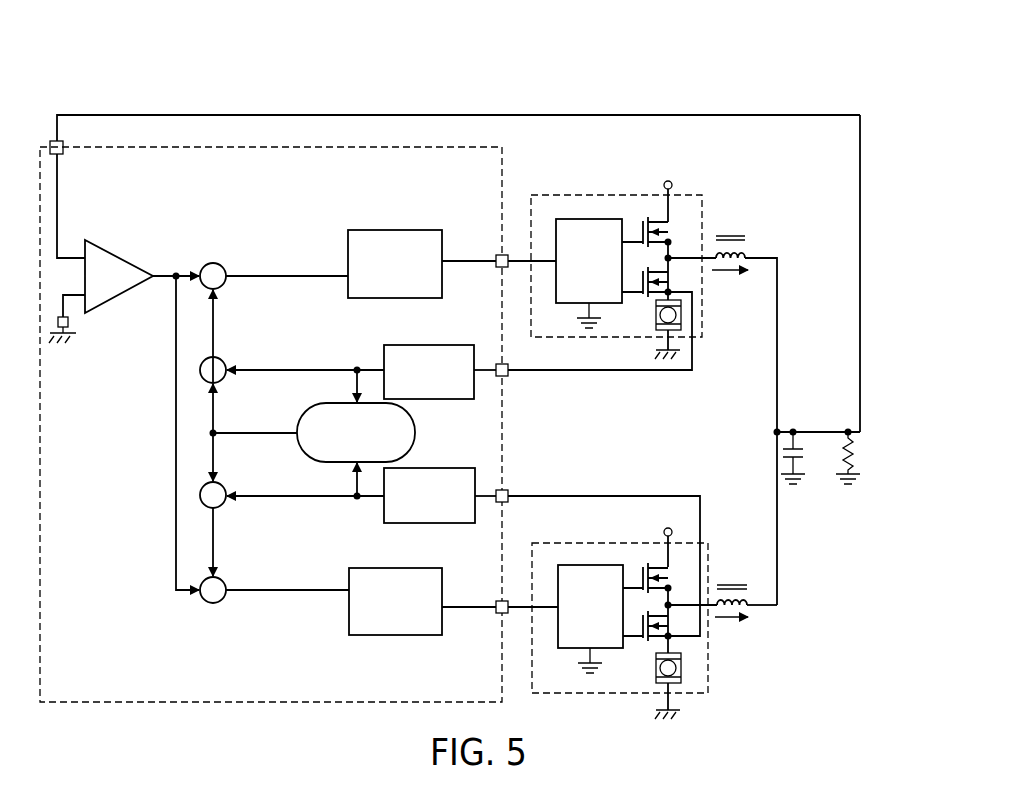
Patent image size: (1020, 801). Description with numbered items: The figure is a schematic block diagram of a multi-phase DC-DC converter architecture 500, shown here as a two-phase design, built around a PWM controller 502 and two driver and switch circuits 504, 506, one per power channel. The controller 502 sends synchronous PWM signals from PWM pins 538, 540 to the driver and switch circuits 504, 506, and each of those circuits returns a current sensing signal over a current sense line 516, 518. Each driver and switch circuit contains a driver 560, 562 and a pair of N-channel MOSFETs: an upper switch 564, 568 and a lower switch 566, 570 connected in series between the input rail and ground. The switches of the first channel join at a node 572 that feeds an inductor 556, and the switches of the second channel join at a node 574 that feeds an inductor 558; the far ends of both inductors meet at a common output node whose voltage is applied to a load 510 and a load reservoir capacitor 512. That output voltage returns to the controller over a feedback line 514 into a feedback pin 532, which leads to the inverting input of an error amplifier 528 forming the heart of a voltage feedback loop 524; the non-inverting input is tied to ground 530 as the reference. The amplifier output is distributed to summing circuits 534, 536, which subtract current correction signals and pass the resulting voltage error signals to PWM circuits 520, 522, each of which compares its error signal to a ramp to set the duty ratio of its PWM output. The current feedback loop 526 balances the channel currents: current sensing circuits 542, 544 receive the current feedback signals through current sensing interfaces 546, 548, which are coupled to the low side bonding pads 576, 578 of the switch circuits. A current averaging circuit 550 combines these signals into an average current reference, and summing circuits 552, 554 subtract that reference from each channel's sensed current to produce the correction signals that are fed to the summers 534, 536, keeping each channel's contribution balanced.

The multi-phase DC-DC converter architecture 500 is at (79, 76).
The PWM controller 502 is at (113, 706).
The driver and switch circuit 504 is at (705, 189).
The driver and switch circuit 506 is at (553, 695).
The load 510 is at (897, 433).
The load reservoir capacitor 512 is at (820, 462).
The feedback line 514 is at (207, 115).
The current sense line 516 is at (578, 372).
The current sense line 518 is at (680, 495).
The PWM circuit 520 is at (395, 230).
The PWM circuit 522 is at (383, 637).
The voltage feedback loop 524 is at (388, 108).
The current feedback loop 526 is at (162, 485).
The error amplifier 528 is at (140, 263).
The ground 530 is at (92, 355).
The feedback pin 532 is at (63, 150).
The summing circuit 534 is at (260, 267).
The summing circuit 536 is at (200, 597).
The PWM pin 538 is at (500, 255).
The PWM pin 540 is at (498, 615).
The current sensing circuit 542 is at (422, 345).
The current sensing circuit 544 is at (432, 468).
The current sensing interface 546 is at (500, 364).
The current sensing interface 548 is at (505, 490).
The current averaging circuit 550 is at (303, 412).
The summing circuit 552 is at (227, 358).
The summing circuit 554 is at (227, 482).
The inductor 556 is at (748, 245).
The inductor 558 is at (748, 598).
The driver 560 is at (556, 230).
The driver 562 is at (558, 583).
The upper switch 564 is at (645, 230).
The lower switch 566 is at (642, 282).
The upper switch 568 is at (643, 577).
The lower switch 570 is at (643, 628).
The node 572 is at (670, 262).
The node 574 is at (670, 603).
The low side bonding pad 576 is at (680, 318).
The low side bonding pad 578 is at (682, 665).